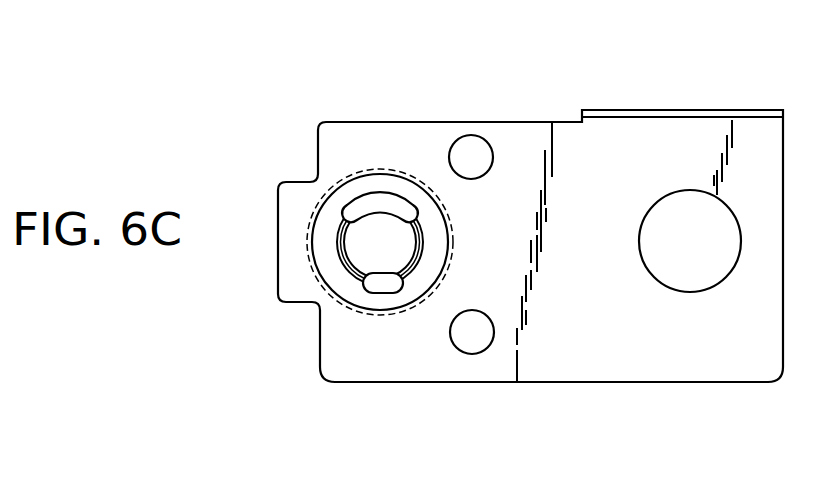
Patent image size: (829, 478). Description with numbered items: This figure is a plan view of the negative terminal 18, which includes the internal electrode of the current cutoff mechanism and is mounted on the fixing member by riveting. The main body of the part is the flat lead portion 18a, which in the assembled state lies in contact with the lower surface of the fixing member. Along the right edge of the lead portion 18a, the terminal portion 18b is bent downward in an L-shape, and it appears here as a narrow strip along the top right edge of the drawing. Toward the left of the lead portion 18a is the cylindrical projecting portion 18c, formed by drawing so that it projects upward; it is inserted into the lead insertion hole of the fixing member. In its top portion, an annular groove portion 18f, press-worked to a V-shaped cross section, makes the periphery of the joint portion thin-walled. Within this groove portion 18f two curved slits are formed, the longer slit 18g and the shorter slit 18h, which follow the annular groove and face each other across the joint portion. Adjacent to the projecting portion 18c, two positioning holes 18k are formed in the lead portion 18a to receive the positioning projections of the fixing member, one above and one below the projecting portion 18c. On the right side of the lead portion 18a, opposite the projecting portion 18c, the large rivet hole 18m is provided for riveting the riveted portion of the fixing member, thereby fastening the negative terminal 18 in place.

The negative terminal 18 is at (290, 120).
The lead portion 18a is at (598, 308).
The terminal portion 18b is at (685, 109).
The projecting portion 18c is at (449, 246).
The groove portion 18f is at (345, 268).
The slit 18g is at (383, 198).
The slit 18h is at (372, 284).
The positioning holes 18k is at (471, 150).
The rivet hole 18m is at (697, 275).